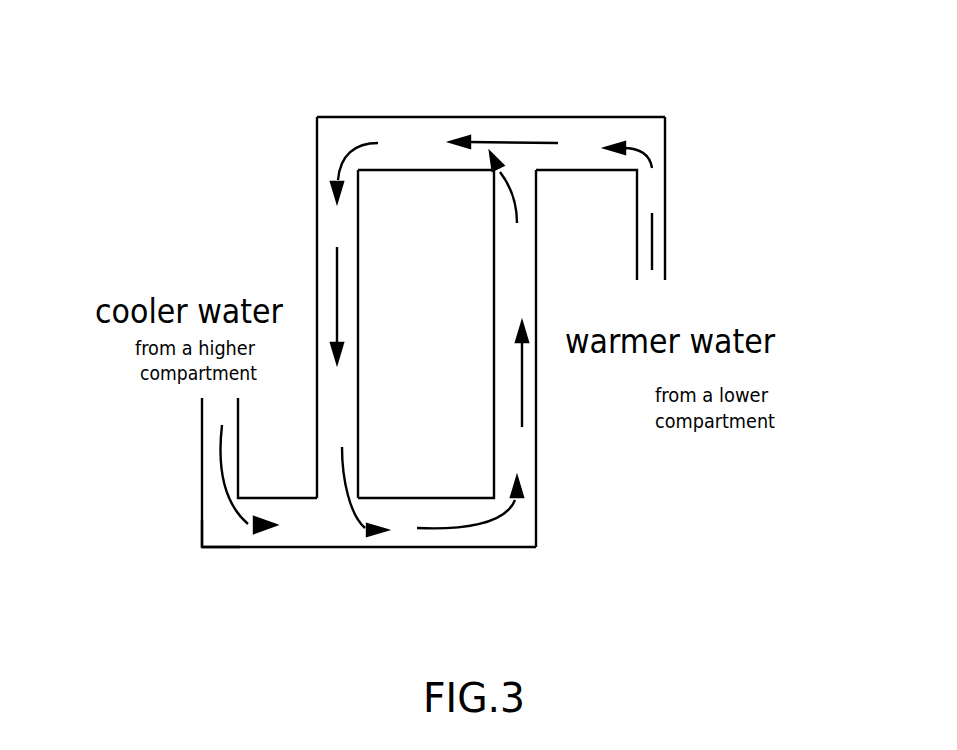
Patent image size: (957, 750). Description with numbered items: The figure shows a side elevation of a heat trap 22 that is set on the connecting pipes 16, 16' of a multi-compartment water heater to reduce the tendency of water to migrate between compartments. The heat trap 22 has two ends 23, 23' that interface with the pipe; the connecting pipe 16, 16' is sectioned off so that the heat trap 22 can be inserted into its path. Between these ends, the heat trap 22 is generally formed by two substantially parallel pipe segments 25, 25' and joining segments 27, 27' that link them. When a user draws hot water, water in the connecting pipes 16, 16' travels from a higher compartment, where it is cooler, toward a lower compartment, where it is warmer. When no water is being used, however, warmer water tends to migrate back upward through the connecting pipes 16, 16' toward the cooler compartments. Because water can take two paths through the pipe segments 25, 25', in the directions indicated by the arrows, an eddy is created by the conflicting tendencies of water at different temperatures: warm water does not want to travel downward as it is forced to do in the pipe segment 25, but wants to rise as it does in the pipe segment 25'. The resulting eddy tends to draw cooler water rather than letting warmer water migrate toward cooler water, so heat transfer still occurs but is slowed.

The joining segment 27 is at (491, 115).
The joining segment 27' is at (369, 551).
The end of heat trap 23 is at (680, 186).
The end of heat trap 23' is at (156, 547).
The connecting pipe 16 is at (683, 225).
The connecting pipe 16' is at (177, 472).
The pipe segment 25 is at (363, 307).
The pipe segment 25' is at (443, 334).
The heat trap 22 is at (538, 420).